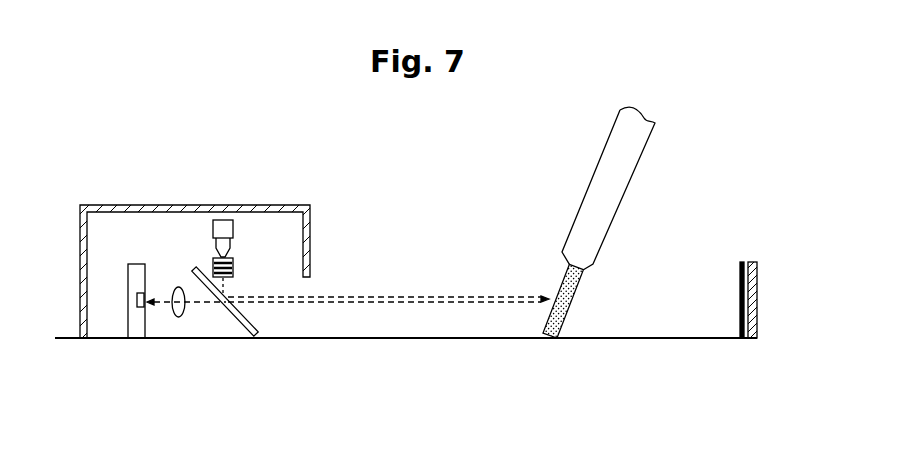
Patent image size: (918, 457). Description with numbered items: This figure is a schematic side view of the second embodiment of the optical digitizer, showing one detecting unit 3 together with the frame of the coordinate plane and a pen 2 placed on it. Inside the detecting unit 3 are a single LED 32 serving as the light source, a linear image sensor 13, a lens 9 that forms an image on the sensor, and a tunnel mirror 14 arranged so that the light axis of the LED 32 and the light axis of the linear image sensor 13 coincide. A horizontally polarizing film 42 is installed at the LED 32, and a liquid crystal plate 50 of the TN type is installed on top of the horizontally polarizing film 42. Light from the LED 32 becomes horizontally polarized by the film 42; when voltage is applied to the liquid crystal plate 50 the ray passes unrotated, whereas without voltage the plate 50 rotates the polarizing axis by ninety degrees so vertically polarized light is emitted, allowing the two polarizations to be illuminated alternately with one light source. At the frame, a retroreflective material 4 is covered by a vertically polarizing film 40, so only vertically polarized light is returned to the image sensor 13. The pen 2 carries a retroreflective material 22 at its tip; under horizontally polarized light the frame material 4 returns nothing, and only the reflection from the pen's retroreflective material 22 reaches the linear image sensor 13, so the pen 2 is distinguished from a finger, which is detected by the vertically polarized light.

The pen 2 is at (603, 213).
The retroreflective material 22 is at (570, 293).
The detecting unit 3 is at (262, 205).
The retroreflective material 4 is at (758, 287).
The vertically polarizing film 40 is at (740, 275).
The lens 9 is at (183, 314).
The linear image sensor 13 is at (140, 339).
The tunnel mirror 14 is at (258, 338).
The LED 32 is at (212, 229).
The horizontally polarizing film 42 is at (235, 262).
The liquid crystal plate 50 is at (233, 272).